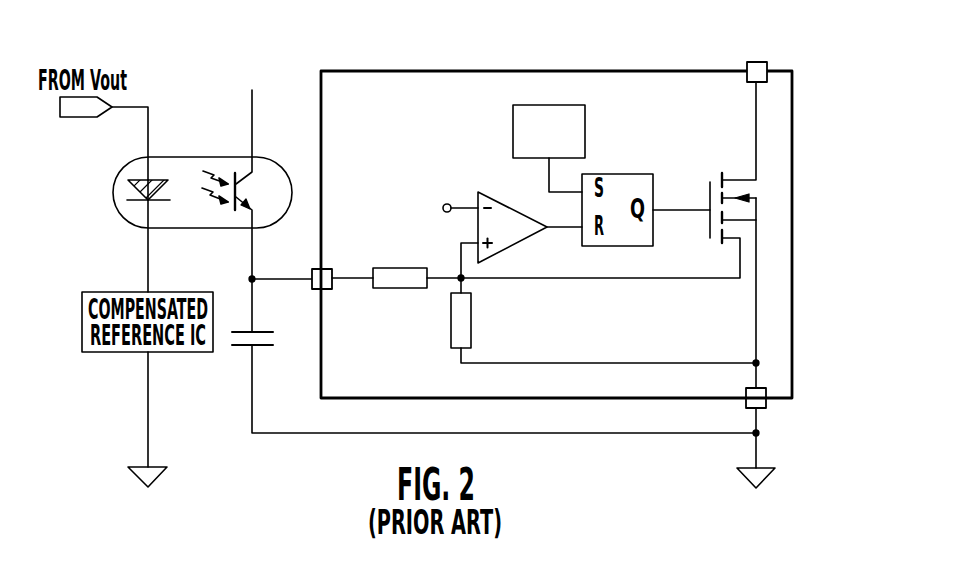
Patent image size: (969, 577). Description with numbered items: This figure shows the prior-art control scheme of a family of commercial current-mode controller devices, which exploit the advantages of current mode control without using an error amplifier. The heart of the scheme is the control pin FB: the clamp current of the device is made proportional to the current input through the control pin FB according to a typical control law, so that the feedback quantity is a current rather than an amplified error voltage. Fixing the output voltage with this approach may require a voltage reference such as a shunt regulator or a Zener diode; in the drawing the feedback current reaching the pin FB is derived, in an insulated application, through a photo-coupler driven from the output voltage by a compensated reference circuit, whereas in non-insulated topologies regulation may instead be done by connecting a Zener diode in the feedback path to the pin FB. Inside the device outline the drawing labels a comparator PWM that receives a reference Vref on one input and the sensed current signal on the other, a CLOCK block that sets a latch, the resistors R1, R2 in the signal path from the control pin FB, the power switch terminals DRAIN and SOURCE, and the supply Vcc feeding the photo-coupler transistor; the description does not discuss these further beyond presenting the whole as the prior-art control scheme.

The resistor R1 is at (400, 301).
The resistor R2 is at (475, 313).
The control pin FB is at (292, 265).
The PWM comparator PWM is at (512, 213).
The clock CLOCK is at (549, 148).
The drain pin DRAIN is at (751, 105).
The source pin SOURCE is at (792, 438).
The supply voltage Vcc is at (249, 122).
The reference voltage Vref is at (440, 207).